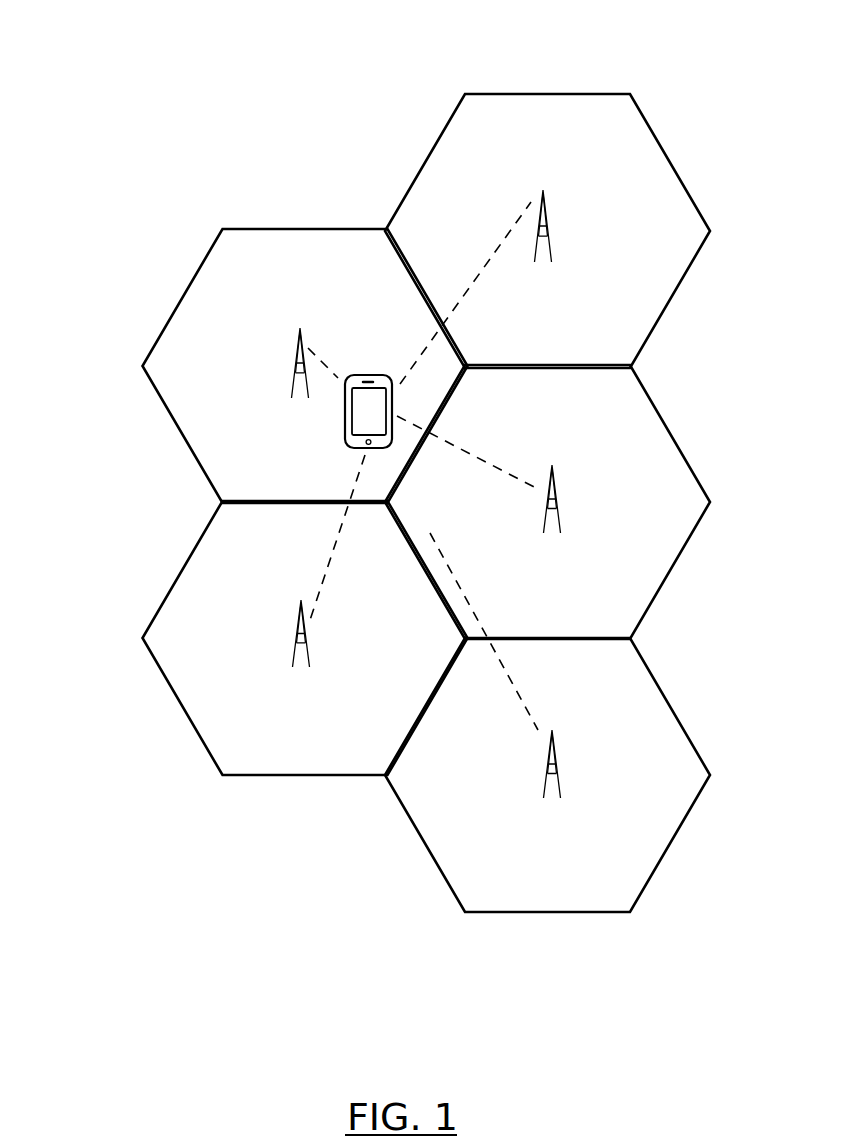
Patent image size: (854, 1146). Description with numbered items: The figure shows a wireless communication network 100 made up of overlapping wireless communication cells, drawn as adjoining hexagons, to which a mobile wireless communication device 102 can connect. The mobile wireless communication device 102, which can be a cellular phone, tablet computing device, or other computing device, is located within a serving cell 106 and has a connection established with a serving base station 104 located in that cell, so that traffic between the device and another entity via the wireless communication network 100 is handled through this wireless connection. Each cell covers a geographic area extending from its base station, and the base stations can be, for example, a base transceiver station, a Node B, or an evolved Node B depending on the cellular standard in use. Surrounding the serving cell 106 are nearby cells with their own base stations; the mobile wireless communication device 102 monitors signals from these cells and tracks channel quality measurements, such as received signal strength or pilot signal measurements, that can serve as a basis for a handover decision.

The wireless communication network 100 is at (130, 120).
The mobile wireless communication device 102 is at (345, 411).
The serving base station 104 is at (282, 338).
The serving cell 106 is at (205, 262).